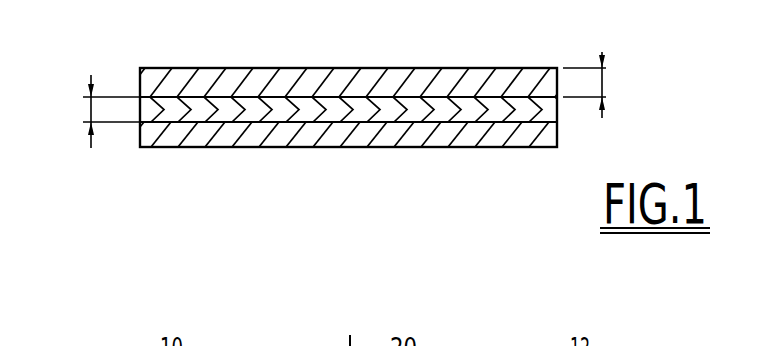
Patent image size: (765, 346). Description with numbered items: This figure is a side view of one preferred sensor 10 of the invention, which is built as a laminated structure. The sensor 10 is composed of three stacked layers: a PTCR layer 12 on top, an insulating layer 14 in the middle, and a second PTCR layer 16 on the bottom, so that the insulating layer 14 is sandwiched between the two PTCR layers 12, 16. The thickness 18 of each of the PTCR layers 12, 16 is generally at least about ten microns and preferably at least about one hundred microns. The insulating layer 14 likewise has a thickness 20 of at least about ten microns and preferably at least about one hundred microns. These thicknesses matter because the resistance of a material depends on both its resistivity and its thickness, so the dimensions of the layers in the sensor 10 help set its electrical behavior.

The sensor 10 is at (217, 41).
The PTCR layer 12 is at (422, 67).
The insulating layer 14 is at (143, 113).
The PTCR layer 16 is at (243, 139).
The thickness 18 is at (604, 80).
The thickness 20 is at (90, 107).